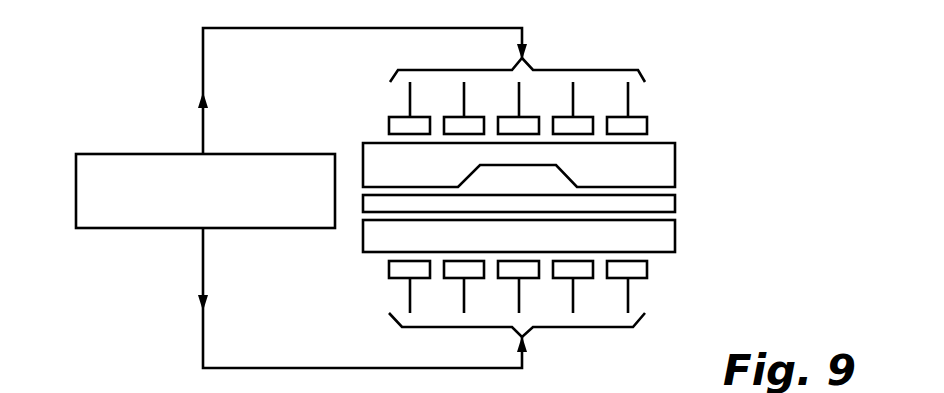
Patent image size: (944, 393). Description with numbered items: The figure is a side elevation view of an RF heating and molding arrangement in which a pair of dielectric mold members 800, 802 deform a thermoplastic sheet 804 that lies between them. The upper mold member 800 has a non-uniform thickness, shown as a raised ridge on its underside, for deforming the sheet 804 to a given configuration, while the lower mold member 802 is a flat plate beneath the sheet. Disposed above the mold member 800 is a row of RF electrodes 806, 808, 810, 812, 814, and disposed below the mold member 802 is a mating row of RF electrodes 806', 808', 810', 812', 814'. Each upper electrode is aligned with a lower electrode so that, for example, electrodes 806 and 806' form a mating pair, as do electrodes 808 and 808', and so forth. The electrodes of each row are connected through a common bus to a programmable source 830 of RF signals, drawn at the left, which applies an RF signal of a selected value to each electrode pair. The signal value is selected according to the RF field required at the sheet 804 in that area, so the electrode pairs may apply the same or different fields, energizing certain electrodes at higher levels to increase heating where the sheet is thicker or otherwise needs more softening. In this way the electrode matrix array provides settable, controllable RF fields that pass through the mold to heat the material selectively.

The programmable source 830 is at (105, 154).
The dielectric mold member 800 is at (665, 163).
The thermoplastic sheet 804 is at (665, 203).
The dielectric mold member 802 is at (652, 237).
The RF electrode 814 is at (356, 100).
The RF electrode 812 is at (418, 84).
The RF electrode 810 is at (549, 80).
The RF electrode 808 is at (624, 80).
The RF electrode 806 is at (667, 107).
The RF electrode 814' is at (361, 291).
The RF electrode 812' is at (473, 313).
The RF electrode 810' is at (555, 321).
The RF electrode 808' is at (622, 314).
The RF electrode 806' is at (673, 287).